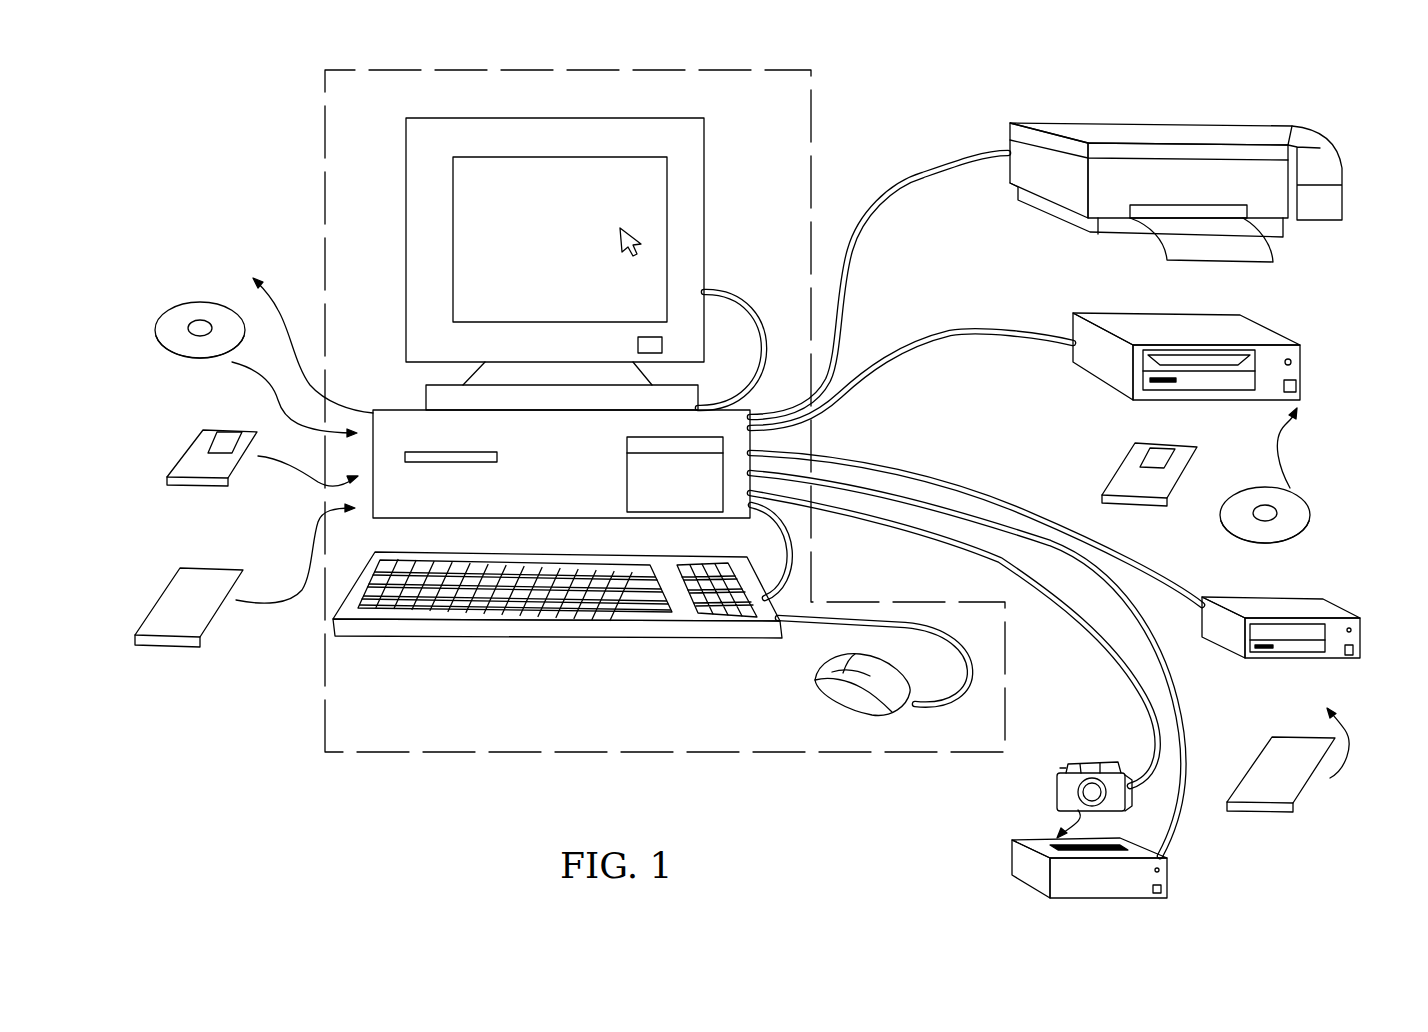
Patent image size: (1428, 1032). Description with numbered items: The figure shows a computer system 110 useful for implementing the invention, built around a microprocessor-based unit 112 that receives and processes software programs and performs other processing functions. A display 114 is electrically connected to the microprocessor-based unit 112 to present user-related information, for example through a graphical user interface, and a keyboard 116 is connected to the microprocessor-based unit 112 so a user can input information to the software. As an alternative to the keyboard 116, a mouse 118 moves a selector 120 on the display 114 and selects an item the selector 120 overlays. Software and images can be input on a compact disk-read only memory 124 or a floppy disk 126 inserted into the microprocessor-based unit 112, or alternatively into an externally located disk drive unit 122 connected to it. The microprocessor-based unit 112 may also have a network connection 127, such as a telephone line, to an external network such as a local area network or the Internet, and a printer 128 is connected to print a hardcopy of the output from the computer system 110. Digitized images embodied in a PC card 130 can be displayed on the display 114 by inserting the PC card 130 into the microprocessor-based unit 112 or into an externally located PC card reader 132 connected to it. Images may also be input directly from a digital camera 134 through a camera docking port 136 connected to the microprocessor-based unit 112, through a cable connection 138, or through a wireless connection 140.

The computer system 110 is at (818, 98).
The microprocessor-based unit 112 is at (400, 410).
The display 114 is at (530, 118).
The keyboard 116 is at (477, 641).
The mouse 118 is at (828, 688).
The selector 120 is at (641, 240).
The externally located disk drive unit 122 is at (1123, 313).
The compact disk-read only memory (CD-ROM) 124 is at (174, 310).
The floppy disk 126 is at (200, 443).
The network connection 127 is at (290, 331).
The printer 128 is at (1130, 123).
The personal computer card (PC card) 130 is at (175, 578).
The externally located PC card reader 132 is at (1297, 658).
The digital camera 134 is at (1093, 762).
The camera docking port 136 is at (1028, 877).
The cable connection 138 is at (884, 526).
The wireless connection 140 is at (1057, 787).